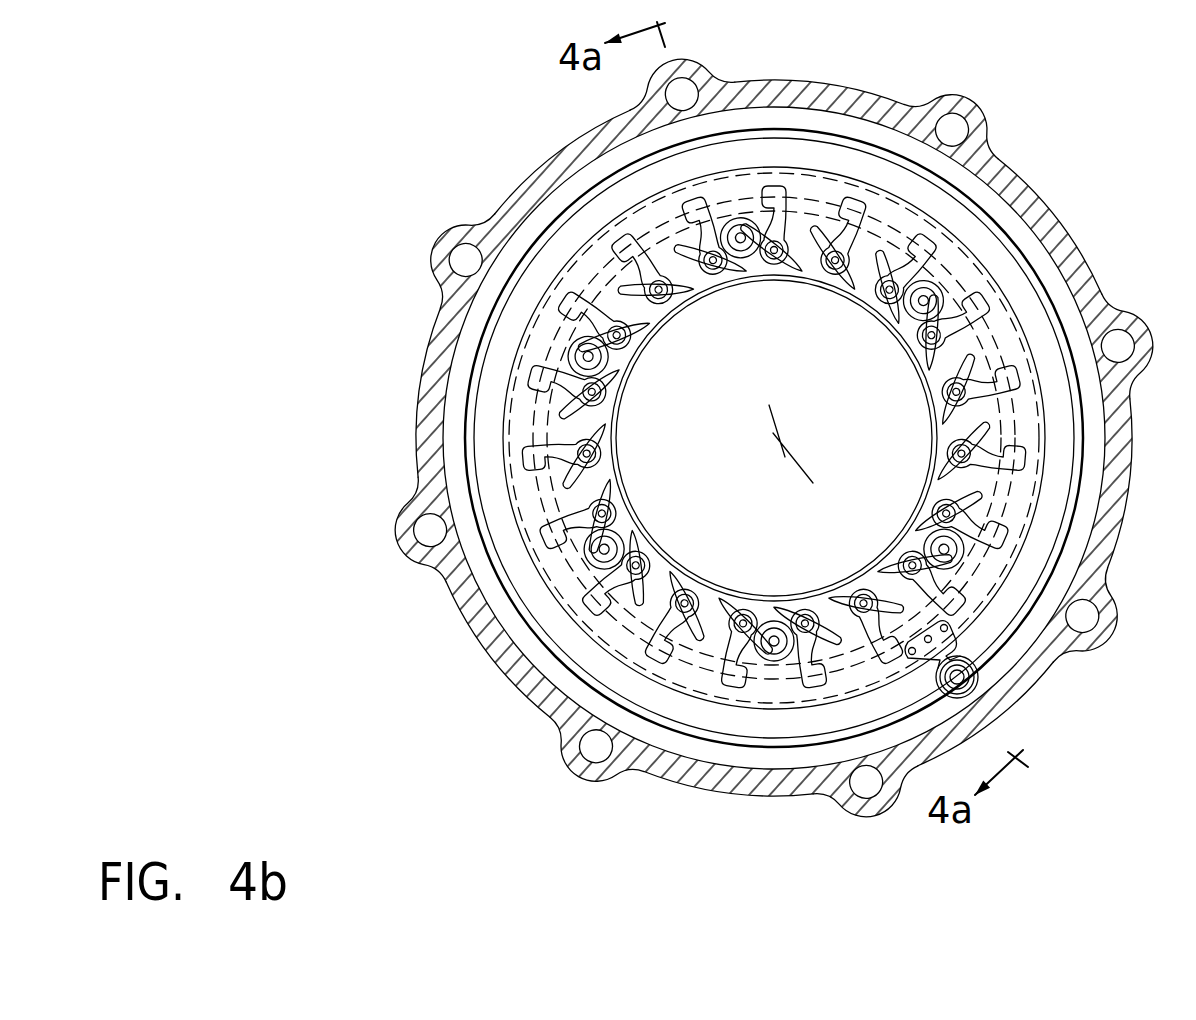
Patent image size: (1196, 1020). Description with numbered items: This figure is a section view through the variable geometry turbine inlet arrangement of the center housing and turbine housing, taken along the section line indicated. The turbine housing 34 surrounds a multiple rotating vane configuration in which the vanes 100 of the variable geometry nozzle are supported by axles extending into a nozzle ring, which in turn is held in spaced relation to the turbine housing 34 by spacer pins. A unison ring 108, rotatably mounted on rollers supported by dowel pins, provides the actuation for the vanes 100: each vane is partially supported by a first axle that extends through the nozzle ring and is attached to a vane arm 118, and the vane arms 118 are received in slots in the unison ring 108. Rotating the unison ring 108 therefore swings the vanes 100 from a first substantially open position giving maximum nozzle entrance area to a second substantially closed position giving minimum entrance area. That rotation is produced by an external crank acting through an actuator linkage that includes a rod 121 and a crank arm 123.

The turbine housing 34 is at (1072, 240).
The vanes 100 is at (965, 495).
The unison ring 108 is at (1027, 418).
The vane arm 118 is at (997, 523).
The rod 121 is at (957, 677).
The crank arm 123 is at (948, 636).